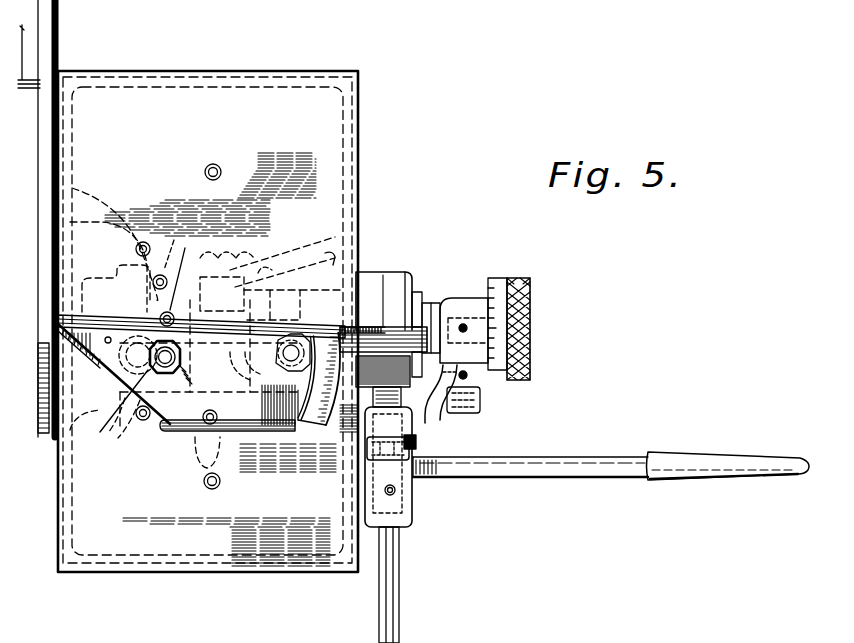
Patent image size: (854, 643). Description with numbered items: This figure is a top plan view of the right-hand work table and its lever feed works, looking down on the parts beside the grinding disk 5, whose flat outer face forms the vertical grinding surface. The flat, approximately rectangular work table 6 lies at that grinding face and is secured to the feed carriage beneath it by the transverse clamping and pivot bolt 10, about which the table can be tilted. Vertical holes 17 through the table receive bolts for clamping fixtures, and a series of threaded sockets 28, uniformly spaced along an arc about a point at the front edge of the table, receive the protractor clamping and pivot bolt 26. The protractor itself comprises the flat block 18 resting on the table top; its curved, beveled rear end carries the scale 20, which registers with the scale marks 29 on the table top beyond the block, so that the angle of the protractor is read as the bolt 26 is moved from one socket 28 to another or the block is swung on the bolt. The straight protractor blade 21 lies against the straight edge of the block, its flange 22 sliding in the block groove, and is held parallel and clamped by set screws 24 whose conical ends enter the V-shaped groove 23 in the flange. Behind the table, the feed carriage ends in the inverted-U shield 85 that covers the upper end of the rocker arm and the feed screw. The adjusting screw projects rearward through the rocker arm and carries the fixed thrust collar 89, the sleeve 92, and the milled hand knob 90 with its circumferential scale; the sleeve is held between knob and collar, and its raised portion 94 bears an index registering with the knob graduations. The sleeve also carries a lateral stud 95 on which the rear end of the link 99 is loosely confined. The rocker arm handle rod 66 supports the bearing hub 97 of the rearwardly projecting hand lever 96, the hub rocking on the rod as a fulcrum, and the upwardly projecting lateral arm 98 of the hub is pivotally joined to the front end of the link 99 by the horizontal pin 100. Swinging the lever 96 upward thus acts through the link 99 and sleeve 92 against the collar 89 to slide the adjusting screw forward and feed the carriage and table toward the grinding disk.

The grinding disk 5 is at (58, 27).
The work table 6 is at (152, 72).
The clamping and pivot bolt 10 is at (218, 252).
The vertical holes 17 is at (222, 172).
The protractor block 18 is at (185, 428).
The scale 20 is at (328, 427).
The protractor blade 21 is at (288, 328).
The flange 22 is at (114, 374).
The V-shaped groove 23 is at (378, 335).
The set screws 24 is at (121, 337).
The protractor clamping and pivot bolt 26 is at (119, 416).
The threaded sockets 28 is at (149, 247).
The scale marks 29 is at (232, 78).
The handle rod 66 is at (400, 582).
The shield 85 is at (400, 283).
The fixed collar 89 is at (428, 306).
The hand knob 90 is at (514, 282).
The sleeve 92 is at (453, 301).
The raised portion 94 is at (478, 328).
The stud 95 is at (470, 414).
The hand lever 96 is at (687, 460).
The bearing hub 97 is at (414, 514).
The lateral arm 98 is at (414, 447).
The link 99 is at (416, 440).
The pin 100 is at (403, 470).